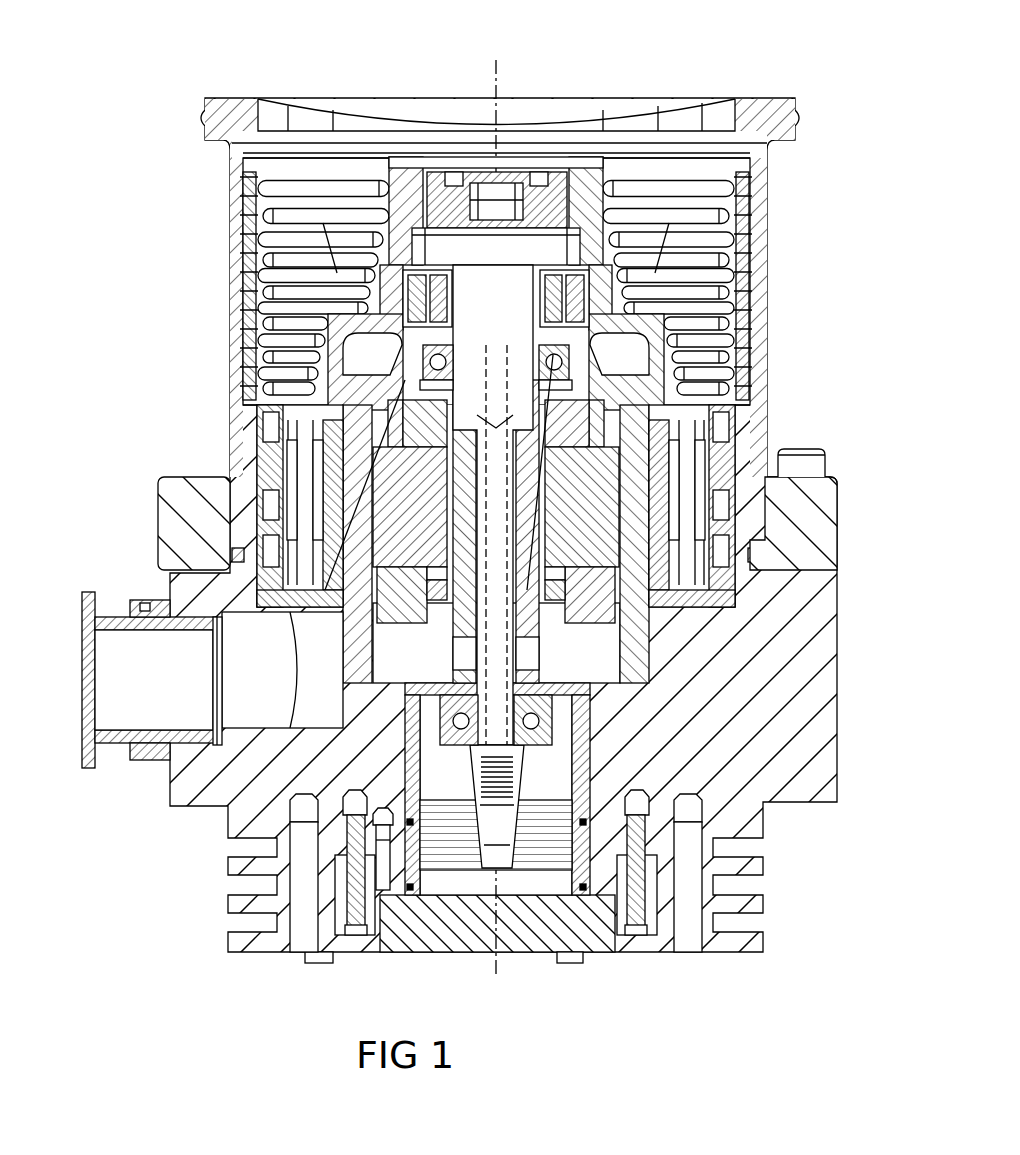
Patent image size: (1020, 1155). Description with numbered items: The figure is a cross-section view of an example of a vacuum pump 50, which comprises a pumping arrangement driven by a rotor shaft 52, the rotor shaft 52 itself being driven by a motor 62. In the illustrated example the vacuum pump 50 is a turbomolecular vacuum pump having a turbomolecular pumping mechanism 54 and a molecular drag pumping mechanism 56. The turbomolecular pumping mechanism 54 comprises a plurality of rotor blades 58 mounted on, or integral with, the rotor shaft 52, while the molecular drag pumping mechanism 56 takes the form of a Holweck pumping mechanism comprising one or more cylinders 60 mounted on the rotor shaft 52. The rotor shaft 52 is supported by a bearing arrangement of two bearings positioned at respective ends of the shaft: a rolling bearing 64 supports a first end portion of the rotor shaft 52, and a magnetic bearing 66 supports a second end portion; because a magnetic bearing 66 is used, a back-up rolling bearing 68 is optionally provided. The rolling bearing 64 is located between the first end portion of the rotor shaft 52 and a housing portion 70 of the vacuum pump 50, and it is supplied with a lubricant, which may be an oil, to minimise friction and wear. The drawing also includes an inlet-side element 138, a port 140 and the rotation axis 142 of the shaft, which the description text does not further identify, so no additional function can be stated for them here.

The vacuum pump 50 is at (852, 552).
The rotor shaft 52 is at (512, 657).
The turbomolecular pumping mechanism 54 is at (788, 230).
The molecular drag pumping mechanism 56 is at (834, 448).
The rotor blades 58 is at (245, 212).
The cylinders 60 is at (712, 425).
The motor 62 is at (330, 470).
The rolling bearing 64 is at (462, 698).
The magnetic bearing 66 is at (450, 300).
The back-up rolling bearing 68 is at (410, 362).
The housing portion 70 is at (838, 764).
The inlet screen plate 138 is at (608, 98).
The exhaust port 140 is at (102, 716).
The rotation axis 142 is at (497, 62).